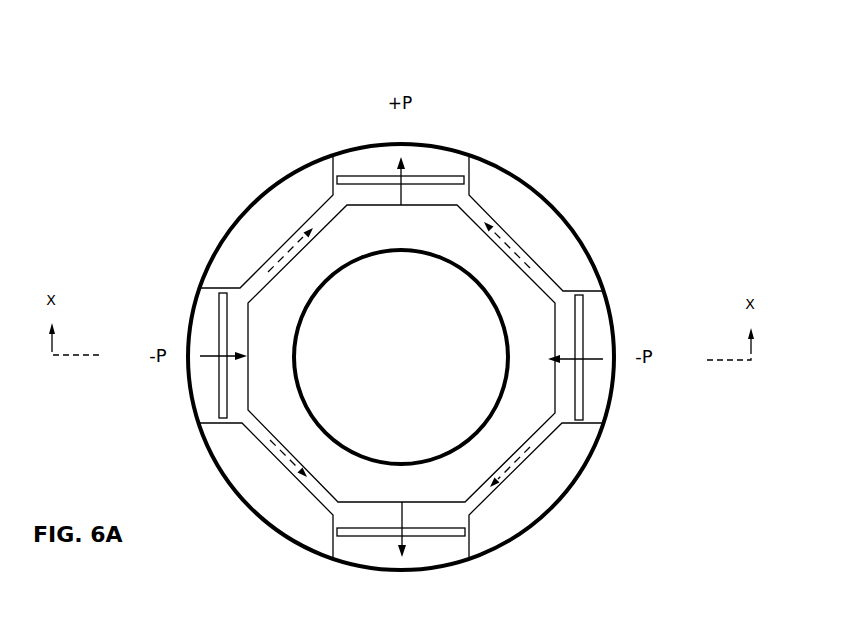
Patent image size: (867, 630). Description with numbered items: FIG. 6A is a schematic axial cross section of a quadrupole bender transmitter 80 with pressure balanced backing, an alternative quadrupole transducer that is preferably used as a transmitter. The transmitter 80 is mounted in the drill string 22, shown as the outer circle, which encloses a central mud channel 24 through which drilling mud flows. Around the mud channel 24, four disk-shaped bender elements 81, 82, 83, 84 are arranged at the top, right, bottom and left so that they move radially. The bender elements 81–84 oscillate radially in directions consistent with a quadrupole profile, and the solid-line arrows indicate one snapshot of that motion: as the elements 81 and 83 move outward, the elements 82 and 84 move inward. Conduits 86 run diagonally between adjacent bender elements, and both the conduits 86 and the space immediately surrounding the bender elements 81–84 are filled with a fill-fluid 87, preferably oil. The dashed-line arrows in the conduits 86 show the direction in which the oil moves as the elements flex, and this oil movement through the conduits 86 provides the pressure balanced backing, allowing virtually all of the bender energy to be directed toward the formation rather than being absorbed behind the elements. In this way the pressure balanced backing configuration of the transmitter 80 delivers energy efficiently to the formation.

The drill string 22 is at (322, 158).
The mud channel 24 is at (362, 305).
The quadrupole bender transmitter 80 is at (573, 68).
The bender element 81 is at (428, 176).
The bender element 82 is at (583, 385).
The bender element 83 is at (373, 537).
The bender element 84 is at (212, 330).
The conduits 86 is at (447, 192).
The fill-fluid 87 is at (442, 162).